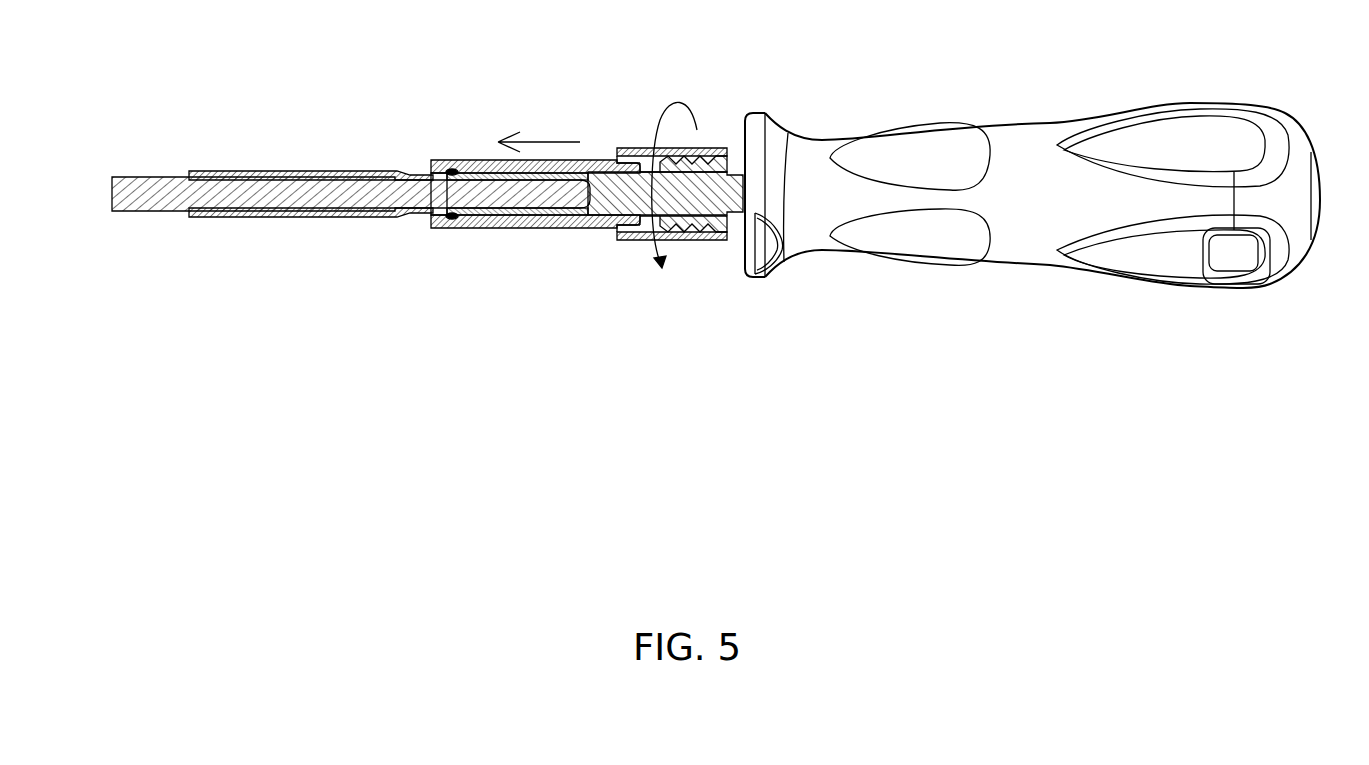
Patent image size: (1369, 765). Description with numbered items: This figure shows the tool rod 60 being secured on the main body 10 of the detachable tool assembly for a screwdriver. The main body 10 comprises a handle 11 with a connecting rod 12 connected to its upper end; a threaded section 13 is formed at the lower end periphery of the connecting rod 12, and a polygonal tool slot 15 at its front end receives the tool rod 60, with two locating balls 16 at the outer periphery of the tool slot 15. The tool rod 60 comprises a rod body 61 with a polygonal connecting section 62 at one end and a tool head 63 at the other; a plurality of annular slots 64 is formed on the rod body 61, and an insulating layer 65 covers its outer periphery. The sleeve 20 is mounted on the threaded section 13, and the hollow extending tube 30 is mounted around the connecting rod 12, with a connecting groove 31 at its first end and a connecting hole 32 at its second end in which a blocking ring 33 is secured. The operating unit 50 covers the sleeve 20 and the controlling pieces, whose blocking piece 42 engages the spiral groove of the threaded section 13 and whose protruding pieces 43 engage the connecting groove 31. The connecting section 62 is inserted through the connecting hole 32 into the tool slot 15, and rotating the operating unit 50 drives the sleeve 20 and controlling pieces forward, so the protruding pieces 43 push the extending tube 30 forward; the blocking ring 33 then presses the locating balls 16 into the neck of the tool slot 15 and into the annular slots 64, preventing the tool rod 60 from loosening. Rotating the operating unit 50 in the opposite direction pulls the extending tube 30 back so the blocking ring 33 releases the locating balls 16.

The main body 10 is at (1055, 192).
The handle 11 is at (1200, 106).
The connecting rod 12 is at (737, 198).
The threaded section 13 is at (708, 242).
The tool slot 15 is at (468, 251).
The locating balls 16 is at (411, 141).
The sleeve 20 is at (635, 218).
The extending tube 30 is at (496, 210).
The connecting groove 31 is at (633, 149).
The connecting hole 32 is at (425, 222).
The blocking ring 33 is at (460, 165).
The blocking piece 42 is at (670, 242).
The protruding pieces 43 is at (646, 131).
The operating unit 50 is at (661, 180).
The tool rod 60 is at (333, 195).
The rod body 61 is at (305, 206).
The connecting section 62 is at (473, 223).
The tool head 63 is at (124, 181).
The annular slots 64 is at (448, 161).
The insulating layer 65 is at (254, 171).